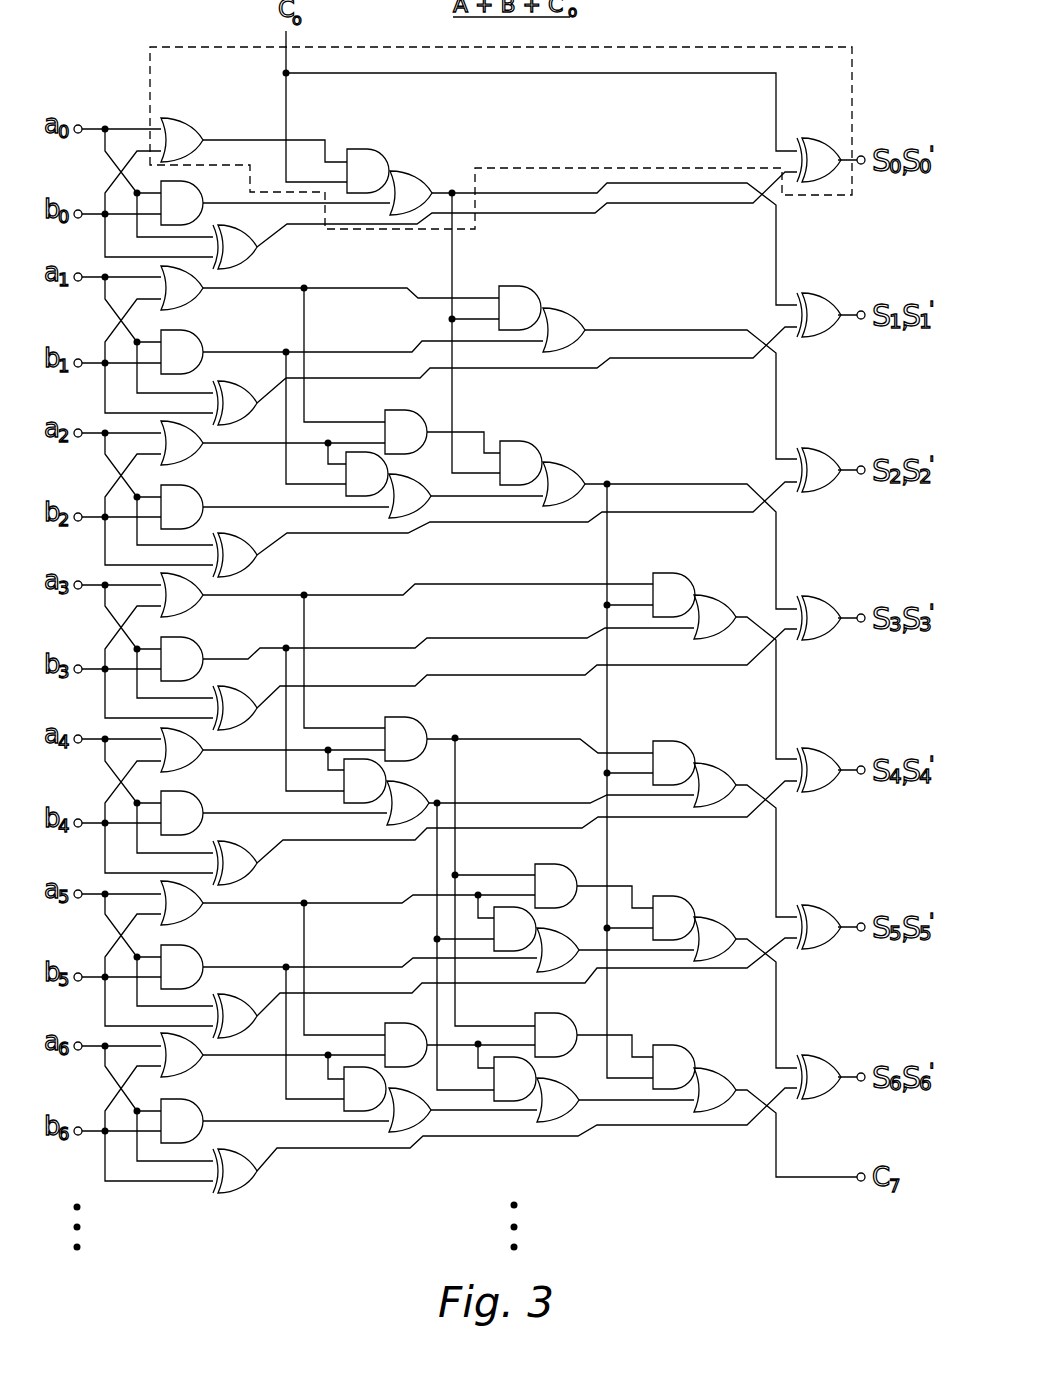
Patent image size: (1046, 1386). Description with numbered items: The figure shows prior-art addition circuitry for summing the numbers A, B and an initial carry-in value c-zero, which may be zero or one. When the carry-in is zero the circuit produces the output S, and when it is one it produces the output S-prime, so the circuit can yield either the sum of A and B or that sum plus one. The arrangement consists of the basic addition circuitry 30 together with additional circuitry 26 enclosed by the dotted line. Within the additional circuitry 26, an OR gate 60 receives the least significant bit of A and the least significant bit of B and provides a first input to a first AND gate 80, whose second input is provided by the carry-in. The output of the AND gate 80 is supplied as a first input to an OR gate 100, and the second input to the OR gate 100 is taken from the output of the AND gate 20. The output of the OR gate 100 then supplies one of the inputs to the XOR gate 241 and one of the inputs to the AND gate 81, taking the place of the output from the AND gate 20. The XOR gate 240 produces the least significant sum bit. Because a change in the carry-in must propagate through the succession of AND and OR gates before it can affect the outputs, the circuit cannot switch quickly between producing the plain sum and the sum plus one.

The additional circuitry 26 is at (186, 78).
The OR gate 60 is at (189, 118).
The AND gate 20 is at (200, 184).
The first AND gate 80 is at (372, 150).
The OR gate 100 is at (416, 173).
The AND gate 81 is at (524, 287).
The XOR gate 240 is at (820, 139).
The XOR gate 241 is at (820, 295).
The addition circuitry 30 is at (328, 1197).